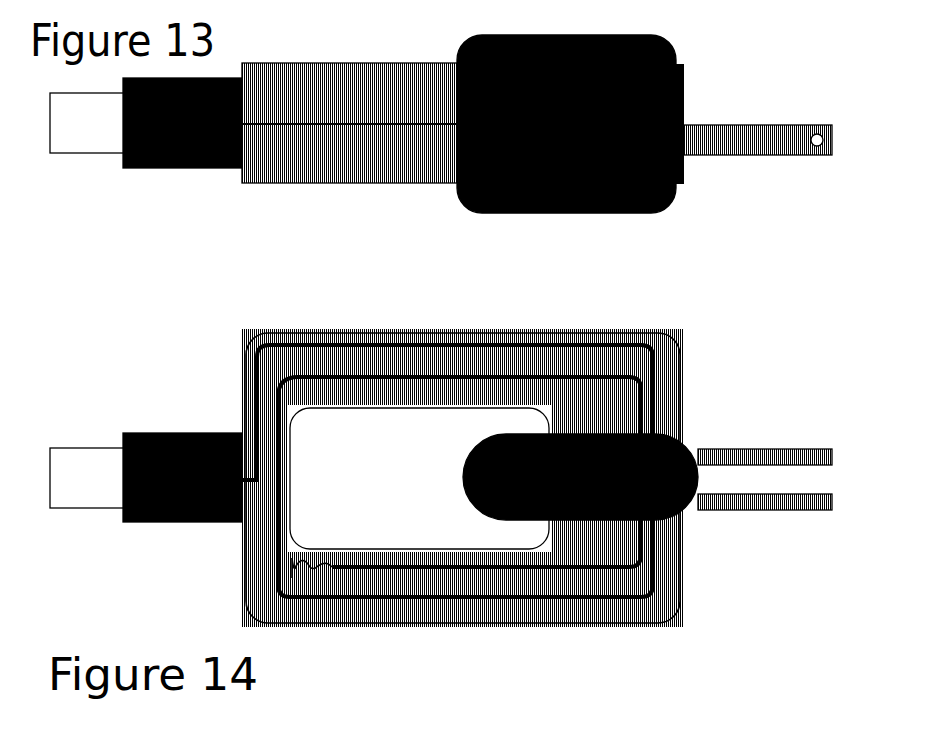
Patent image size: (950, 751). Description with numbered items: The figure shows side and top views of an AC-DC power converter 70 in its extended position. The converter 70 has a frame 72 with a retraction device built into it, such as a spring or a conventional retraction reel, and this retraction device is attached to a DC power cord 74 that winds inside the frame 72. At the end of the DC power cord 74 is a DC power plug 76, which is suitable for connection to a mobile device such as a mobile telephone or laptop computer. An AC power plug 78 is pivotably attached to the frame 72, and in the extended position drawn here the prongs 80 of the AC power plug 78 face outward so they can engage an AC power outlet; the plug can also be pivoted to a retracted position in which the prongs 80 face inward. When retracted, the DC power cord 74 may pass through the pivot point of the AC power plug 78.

In FIG. 13, the power converter 70 is at (177, 225).
In FIG. 14, the power converter 70 is at (703, 689).
In FIG. 13, the frame 72 is at (364, 174).
In FIG. 14, the frame 72 is at (384, 616).
In FIG. 14, the DC power cord 74 is at (440, 347).
In FIG. 13, the DC power plug 76 is at (70, 145).
In FIG. 14, the DC power plug 76 is at (84, 500).
In FIG. 13, the AC power plug 78 is at (712, 181).
In FIG. 14, the AC power plug 78 is at (730, 427).
In FIG. 13, the prongs 80 is at (787, 154).
In FIG. 14, the prongs 80 is at (803, 450).